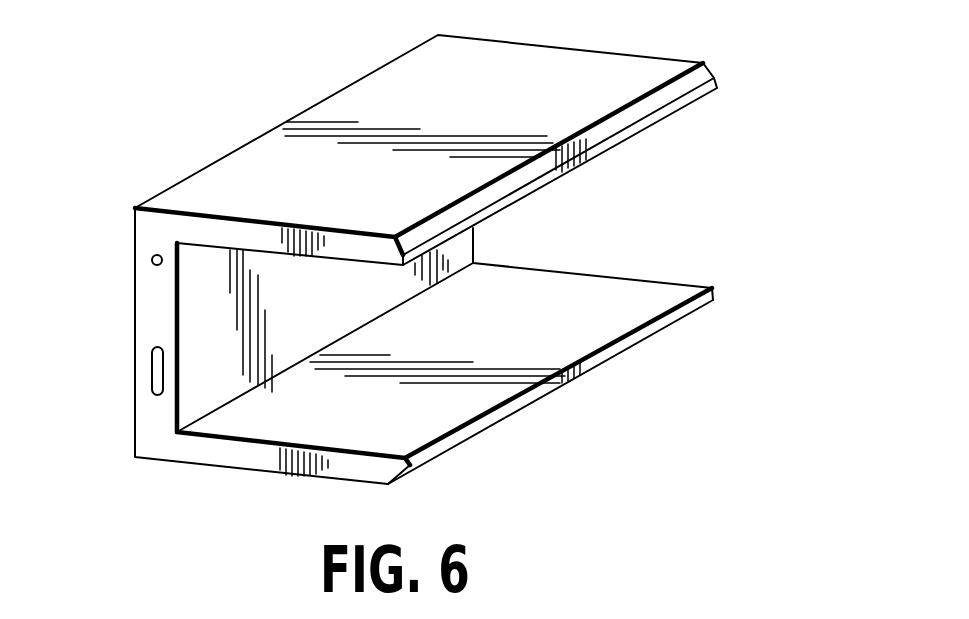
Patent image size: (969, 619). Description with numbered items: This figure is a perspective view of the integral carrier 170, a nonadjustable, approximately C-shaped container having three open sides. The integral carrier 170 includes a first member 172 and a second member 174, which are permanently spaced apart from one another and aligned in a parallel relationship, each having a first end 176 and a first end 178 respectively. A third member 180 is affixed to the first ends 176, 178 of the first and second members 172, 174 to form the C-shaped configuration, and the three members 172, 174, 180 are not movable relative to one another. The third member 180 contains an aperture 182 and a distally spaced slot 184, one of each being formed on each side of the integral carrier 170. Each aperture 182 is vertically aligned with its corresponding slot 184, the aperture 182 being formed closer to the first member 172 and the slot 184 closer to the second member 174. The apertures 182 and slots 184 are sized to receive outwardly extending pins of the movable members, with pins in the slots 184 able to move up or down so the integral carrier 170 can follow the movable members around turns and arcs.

The integral carrier 170 is at (765, 62).
The first member 172 is at (592, 66).
The second member 174 is at (613, 297).
The first end 176 is at (192, 230).
The first end 178 is at (200, 448).
The third member 180 is at (148, 302).
The aperture 182 is at (135, 260).
The slot 184 is at (152, 367).